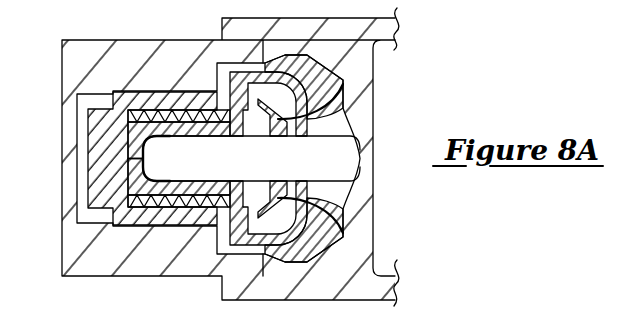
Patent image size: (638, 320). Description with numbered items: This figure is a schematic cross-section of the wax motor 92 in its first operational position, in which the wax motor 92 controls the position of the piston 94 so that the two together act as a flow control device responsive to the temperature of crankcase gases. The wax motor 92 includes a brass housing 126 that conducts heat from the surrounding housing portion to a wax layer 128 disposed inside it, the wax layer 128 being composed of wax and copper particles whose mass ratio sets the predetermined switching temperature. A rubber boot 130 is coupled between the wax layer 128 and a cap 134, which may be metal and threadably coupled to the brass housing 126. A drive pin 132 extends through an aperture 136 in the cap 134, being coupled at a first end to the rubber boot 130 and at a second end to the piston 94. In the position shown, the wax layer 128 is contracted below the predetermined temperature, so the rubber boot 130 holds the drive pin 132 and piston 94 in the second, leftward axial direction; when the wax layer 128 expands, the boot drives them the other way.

The wax motor 92 is at (88, 158).
The piston 94 is at (377, 117).
The brass housing 126 is at (131, 218).
The wax layer 128 is at (175, 200).
The rubber boot 130 is at (278, 194).
The drive pin 132 is at (341, 171).
The cap 134 is at (346, 84).
The aperture 136 is at (284, 158).